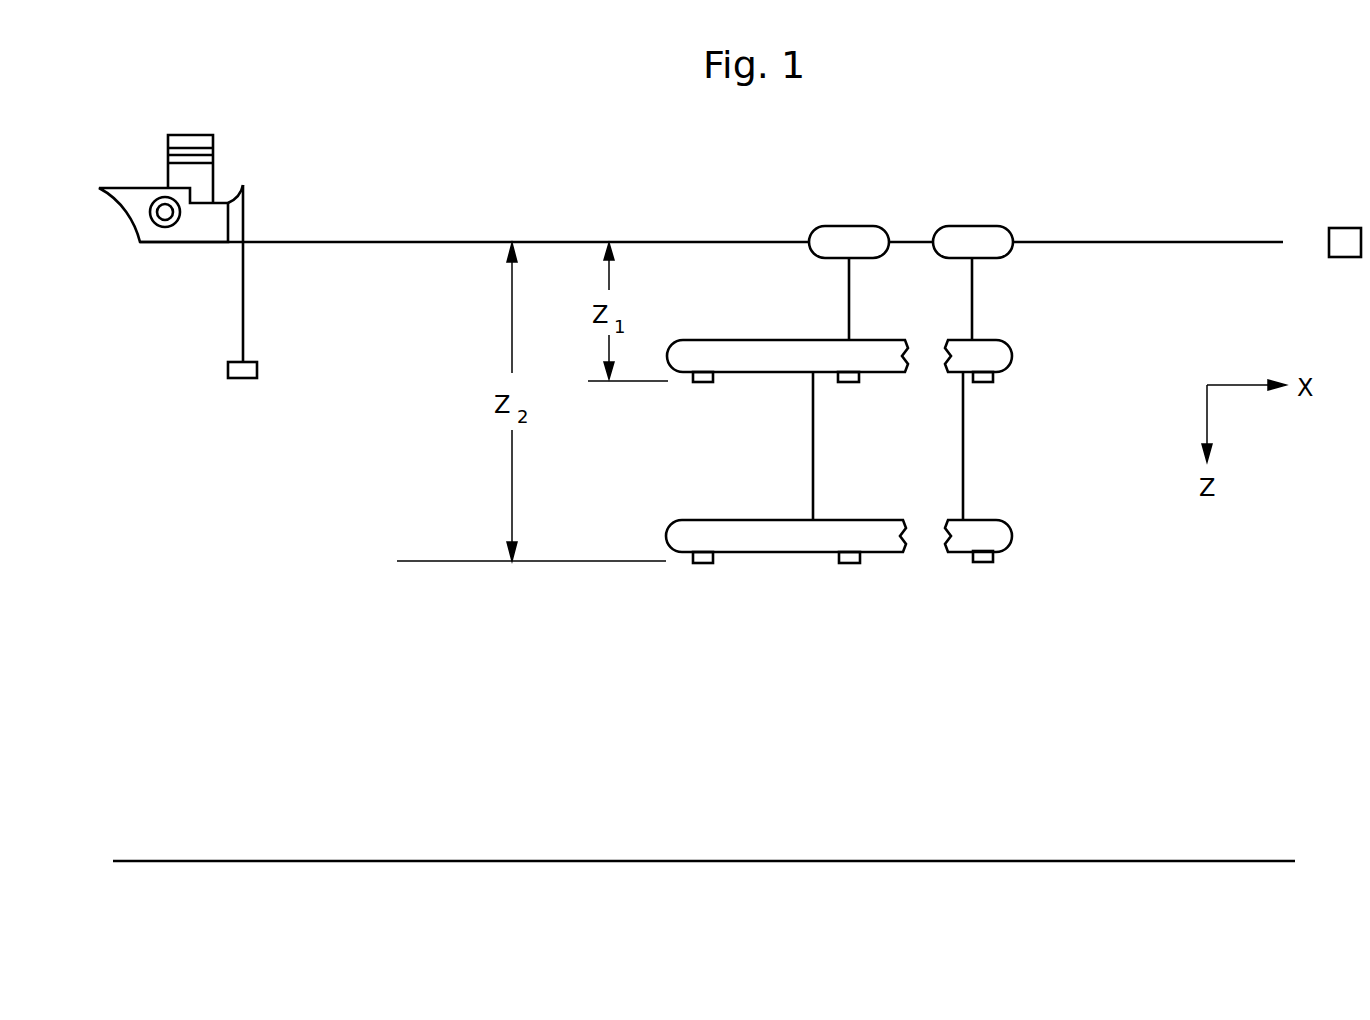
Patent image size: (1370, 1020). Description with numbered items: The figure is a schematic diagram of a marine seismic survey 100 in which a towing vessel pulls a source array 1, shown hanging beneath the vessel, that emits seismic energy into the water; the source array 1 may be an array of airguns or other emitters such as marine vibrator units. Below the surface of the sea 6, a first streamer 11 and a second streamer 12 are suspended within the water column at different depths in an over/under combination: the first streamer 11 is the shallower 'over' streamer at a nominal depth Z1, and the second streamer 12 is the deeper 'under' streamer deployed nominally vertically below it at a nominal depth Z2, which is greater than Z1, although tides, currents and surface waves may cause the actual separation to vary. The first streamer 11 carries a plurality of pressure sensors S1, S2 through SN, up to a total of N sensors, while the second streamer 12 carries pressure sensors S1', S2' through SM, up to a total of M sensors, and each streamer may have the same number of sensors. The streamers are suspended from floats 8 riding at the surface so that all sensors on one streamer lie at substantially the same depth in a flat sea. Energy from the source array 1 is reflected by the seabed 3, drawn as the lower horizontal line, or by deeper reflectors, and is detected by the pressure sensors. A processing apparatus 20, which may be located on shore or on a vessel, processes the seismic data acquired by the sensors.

The marine seismic survey 100 is at (602, 188).
The source array 1 is at (243, 378).
The floats 8 is at (849, 226).
The surface of the sea 6 is at (1117, 242).
The processing apparatus 20 is at (1347, 227).
The first streamer 11 is at (1012, 353).
The second streamer 12 is at (1012, 533).
The seabed 3 is at (1037, 861).
The pressure sensor S1 is at (669, 408).
The pressure sensor S2 is at (880, 408).
The pressure sensor SN is at (983, 382).
The pressure sensor S1' is at (665, 591).
The pressure sensor S2' is at (890, 594).
The pressure sensor SM is at (983, 562).